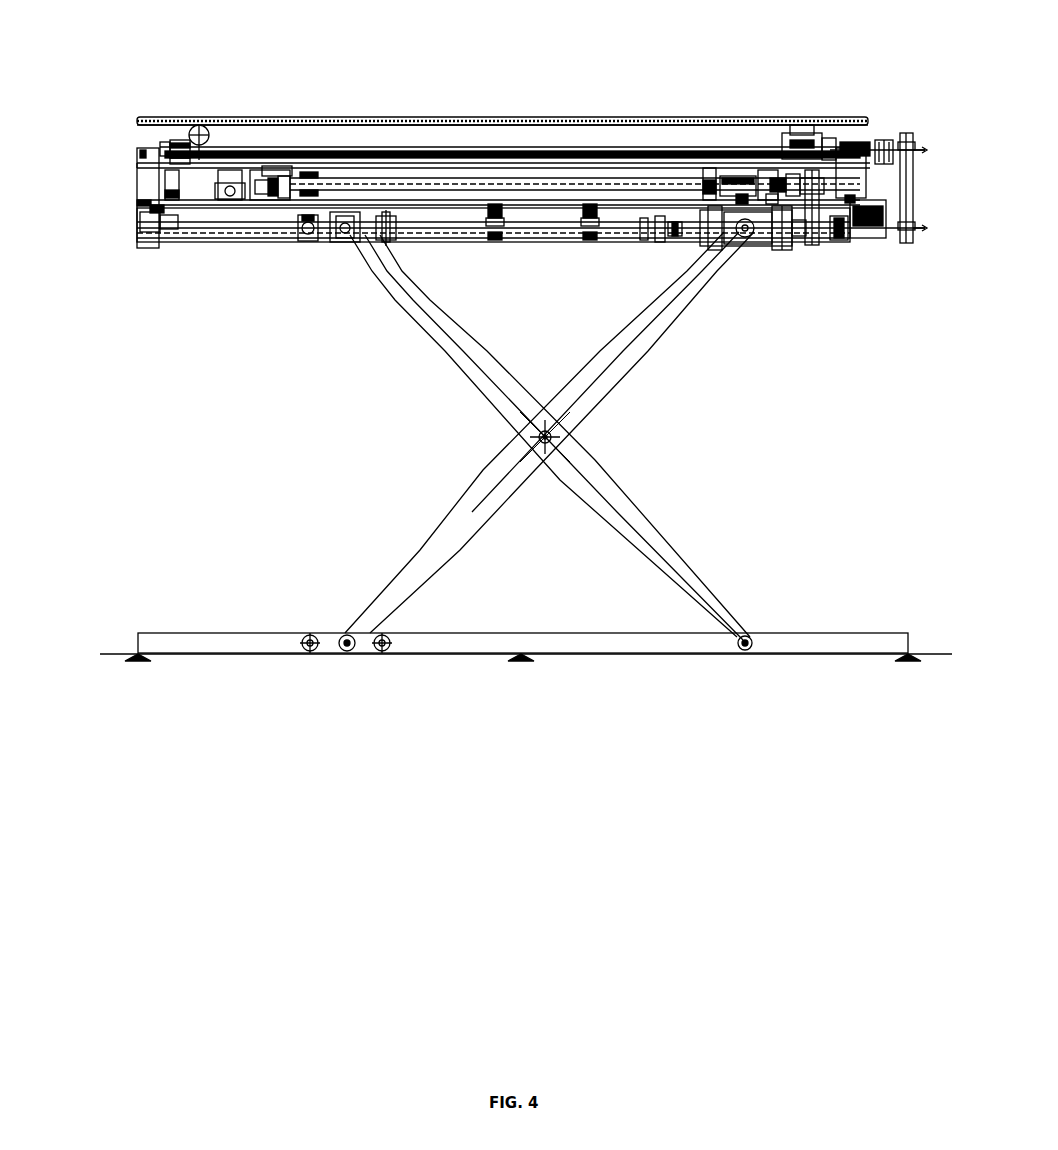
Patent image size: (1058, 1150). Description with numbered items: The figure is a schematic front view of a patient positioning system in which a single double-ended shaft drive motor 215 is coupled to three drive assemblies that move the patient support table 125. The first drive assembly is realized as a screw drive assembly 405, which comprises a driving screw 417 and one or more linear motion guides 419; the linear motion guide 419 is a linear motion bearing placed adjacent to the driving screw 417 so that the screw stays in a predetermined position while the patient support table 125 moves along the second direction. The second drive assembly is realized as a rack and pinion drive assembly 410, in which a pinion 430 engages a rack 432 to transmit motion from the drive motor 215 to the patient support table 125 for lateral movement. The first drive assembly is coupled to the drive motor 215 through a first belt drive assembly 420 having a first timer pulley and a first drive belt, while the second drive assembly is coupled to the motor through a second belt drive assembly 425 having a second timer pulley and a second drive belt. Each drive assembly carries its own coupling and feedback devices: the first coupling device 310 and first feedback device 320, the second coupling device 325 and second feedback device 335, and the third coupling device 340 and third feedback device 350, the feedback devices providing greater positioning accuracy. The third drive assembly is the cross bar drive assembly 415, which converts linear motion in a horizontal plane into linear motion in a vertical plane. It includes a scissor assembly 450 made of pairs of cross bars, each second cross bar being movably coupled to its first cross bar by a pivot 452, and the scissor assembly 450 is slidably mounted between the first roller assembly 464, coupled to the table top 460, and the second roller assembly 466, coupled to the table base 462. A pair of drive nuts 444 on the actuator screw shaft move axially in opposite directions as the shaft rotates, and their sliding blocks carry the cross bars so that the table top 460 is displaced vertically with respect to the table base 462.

The patient support table 125 is at (170, 115).
The screw drive assembly 405 is at (343, 147).
The rack and pinion drive assembly 410 is at (578, 188).
The cross bar drive assembly 415 is at (549, 436).
The driving screw 417 is at (265, 172).
The linear motion guide 419 is at (280, 185).
The rack 432 is at (710, 172).
The table top 460 is at (440, 118).
The first coupling device 310 is at (884, 140).
The first feedback device 320 is at (140, 168).
The third feedback device 350 is at (143, 240).
The second feedback device 335 is at (255, 192).
The pinion 430 is at (282, 193).
The first roller assembly 464 is at (302, 232).
The drive nut 444 is at (344, 236).
The scissor assembly 450 is at (447, 353).
The pivot 452 is at (543, 433).
The third coupling device 340 is at (647, 240).
The drive motor 215 is at (778, 248).
The second coupling device 325 is at (818, 213).
The second belt drive assembly 425 is at (845, 233).
The first belt drive assembly 420 is at (910, 235).
The second roller assembly 466 is at (292, 633).
The table base 462 is at (237, 647).